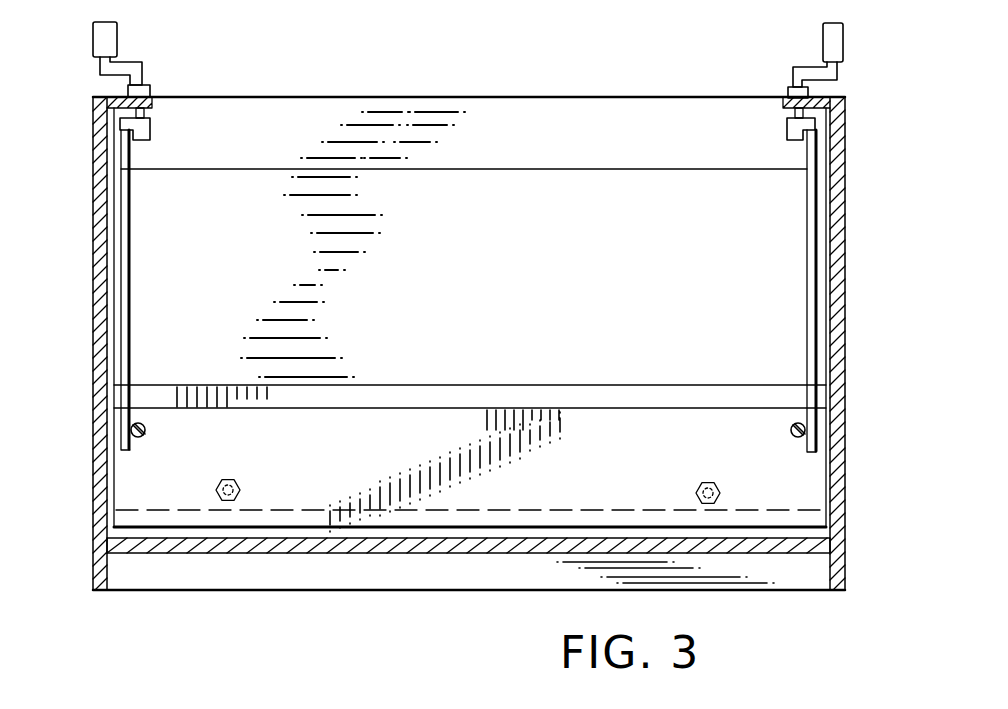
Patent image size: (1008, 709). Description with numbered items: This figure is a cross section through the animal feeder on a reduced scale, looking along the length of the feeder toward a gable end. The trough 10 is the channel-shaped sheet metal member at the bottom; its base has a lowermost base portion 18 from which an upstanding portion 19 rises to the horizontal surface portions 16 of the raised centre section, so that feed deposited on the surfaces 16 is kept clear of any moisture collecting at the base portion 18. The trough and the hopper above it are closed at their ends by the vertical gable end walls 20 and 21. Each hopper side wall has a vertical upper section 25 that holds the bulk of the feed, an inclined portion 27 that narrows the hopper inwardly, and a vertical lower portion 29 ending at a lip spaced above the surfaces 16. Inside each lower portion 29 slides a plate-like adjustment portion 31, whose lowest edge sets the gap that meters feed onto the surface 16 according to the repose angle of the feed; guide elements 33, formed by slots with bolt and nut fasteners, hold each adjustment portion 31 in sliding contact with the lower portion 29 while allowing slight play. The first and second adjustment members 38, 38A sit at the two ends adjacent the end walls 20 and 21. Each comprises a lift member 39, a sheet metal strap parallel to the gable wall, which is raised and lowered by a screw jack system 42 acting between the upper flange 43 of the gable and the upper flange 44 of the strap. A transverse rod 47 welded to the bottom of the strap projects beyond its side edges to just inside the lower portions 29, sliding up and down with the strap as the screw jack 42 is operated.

The trough 10 is at (200, 591).
The horizontal surface portions 16 is at (443, 558).
The lowermost base portion 18 is at (308, 590).
The upstanding portion 19 is at (377, 573).
The end wall 20 is at (90, 402).
The end wall 21 is at (847, 495).
The vertical upper section 25 is at (520, 128).
The inclined portion 27 is at (568, 203).
The vertical lower portion 29 is at (615, 398).
The adjustment portion 31 is at (371, 415).
The guide element 33 is at (246, 486).
The first adjustment member 38 is at (141, 309).
The second adjustment member 38A is at (798, 261).
The lift member 39 is at (130, 233).
The screw jack system 42 is at (130, 63).
The upper flange of the gable 43 is at (157, 108).
The upper flange of the strap 44 is at (150, 126).
The transverse rod 47 is at (150, 430).